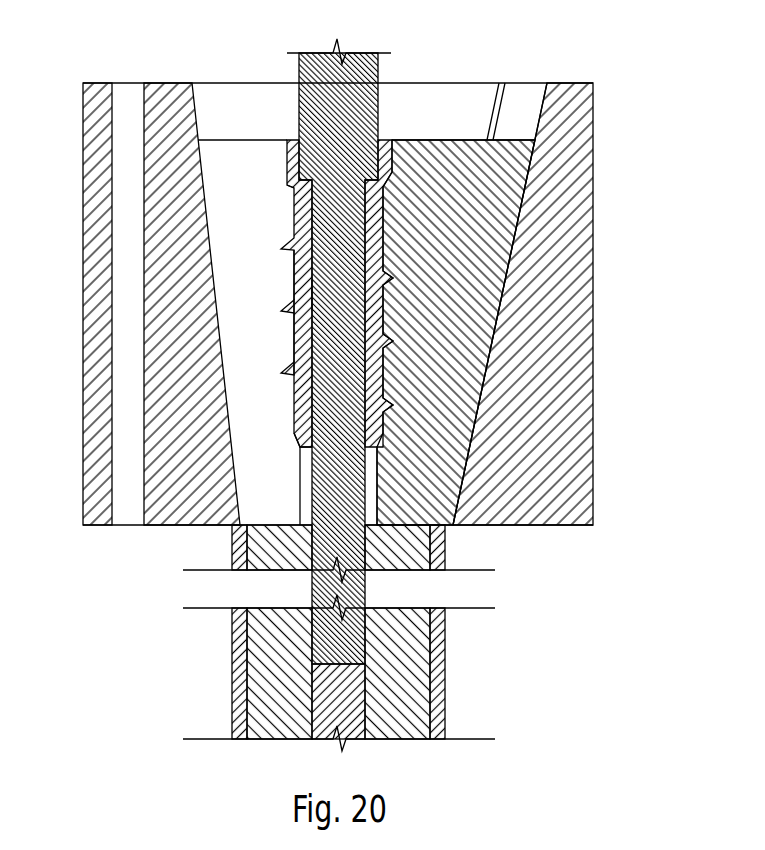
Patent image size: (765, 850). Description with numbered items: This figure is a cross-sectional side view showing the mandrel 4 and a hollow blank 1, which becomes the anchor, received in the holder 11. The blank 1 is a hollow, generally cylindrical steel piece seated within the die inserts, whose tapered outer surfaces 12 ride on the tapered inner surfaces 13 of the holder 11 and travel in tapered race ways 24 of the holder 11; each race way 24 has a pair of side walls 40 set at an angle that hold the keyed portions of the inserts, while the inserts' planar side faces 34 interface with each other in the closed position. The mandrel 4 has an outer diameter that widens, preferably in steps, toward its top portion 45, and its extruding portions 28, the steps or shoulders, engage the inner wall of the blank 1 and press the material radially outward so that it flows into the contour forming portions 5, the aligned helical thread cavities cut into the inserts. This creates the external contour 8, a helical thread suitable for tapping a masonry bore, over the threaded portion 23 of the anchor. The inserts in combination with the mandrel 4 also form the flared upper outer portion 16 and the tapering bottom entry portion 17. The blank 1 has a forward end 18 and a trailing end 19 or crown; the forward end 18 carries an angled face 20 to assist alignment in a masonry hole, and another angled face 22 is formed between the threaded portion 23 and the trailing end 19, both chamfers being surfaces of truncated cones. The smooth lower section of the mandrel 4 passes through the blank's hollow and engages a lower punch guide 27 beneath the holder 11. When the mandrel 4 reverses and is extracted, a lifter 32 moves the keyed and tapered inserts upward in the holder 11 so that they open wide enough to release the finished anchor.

The hollow blank 1 is at (289, 221).
The mandrel 4 is at (388, 70).
The contour forming portions 5 is at (310, 293).
The external contour 8 is at (592, 260).
The holder 11 is at (572, 82).
The outer surfaces 12 is at (207, 283).
The inner surfaces 13 is at (200, 121).
The flared upper outer portion 16 is at (288, 185).
The tapering bottom entry portion 17 is at (380, 442).
The forward end 18 is at (383, 460).
The trailing end 19 is at (390, 148).
The angled face 20 is at (297, 437).
The angled face 22 is at (395, 196).
The threaded portion 23 is at (293, 282).
The race ways 24 is at (517, 95).
The lower punch guide 27 is at (322, 530).
The extruding portions 28 is at (290, 347).
The lifter 32 is at (403, 526).
The planar side faces 34 is at (239, 165).
The side walls 40 is at (498, 117).
The top portion 45 is at (298, 62).